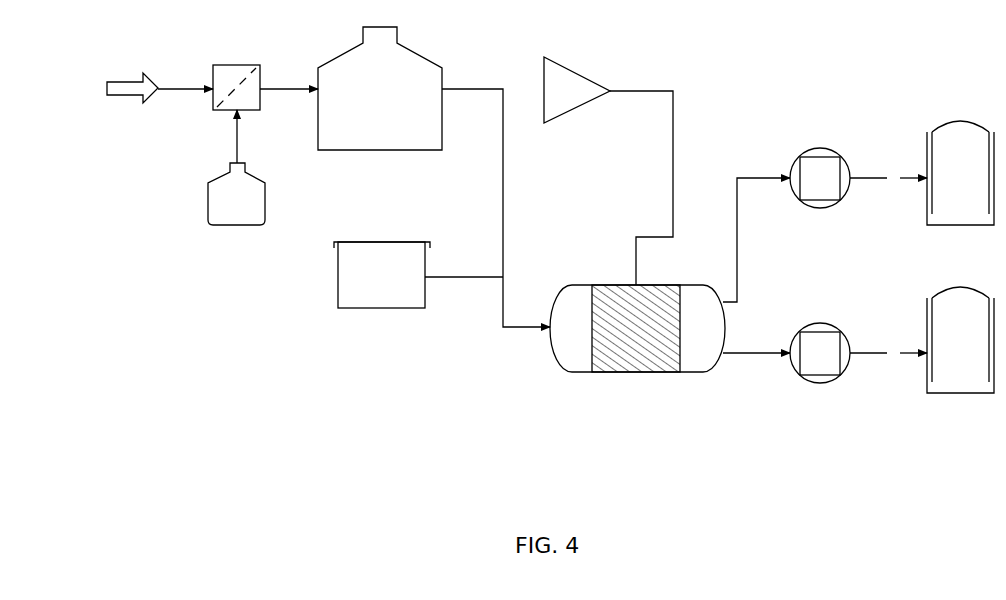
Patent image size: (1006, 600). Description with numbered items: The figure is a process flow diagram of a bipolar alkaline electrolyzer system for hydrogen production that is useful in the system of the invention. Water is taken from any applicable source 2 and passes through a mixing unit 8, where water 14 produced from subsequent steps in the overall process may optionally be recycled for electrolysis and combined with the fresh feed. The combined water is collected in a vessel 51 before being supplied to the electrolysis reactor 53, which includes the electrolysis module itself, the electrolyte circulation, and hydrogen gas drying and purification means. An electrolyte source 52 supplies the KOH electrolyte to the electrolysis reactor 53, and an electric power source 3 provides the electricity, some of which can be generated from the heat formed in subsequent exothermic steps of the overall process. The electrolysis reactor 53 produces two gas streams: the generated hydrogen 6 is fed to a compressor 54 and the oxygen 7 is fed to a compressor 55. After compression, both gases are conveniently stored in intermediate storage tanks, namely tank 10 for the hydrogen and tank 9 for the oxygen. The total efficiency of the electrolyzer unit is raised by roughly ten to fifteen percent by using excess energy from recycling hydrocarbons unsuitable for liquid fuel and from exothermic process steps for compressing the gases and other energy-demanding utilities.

The water source 2 is at (124, 88).
The mixer 8 is at (236, 87).
The recycled water 14 is at (236, 167).
The first tank 51 is at (380, 88).
The electric power source 3 is at (577, 90).
The electrolyte source 52 is at (382, 275).
The electrolysis reactor 53 is at (637, 328).
The compressor 54 is at (820, 178).
The hydrogen 6 is at (888, 178).
The intermediate storage tank 10 is at (960, 173).
The compressor 55 is at (820, 353).
The oxygen 7 is at (888, 353).
The intermediate storage tank 9 is at (960, 340).